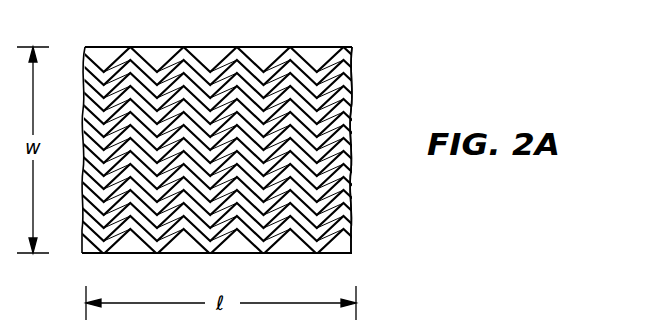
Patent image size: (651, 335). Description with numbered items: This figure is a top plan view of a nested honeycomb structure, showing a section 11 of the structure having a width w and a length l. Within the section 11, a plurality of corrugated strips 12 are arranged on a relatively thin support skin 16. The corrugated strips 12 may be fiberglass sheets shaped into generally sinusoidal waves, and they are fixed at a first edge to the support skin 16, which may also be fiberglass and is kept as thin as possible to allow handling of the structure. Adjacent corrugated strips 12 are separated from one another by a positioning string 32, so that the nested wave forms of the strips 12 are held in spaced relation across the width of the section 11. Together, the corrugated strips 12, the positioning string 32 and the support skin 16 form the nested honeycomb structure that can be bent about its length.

The section 11 is at (362, 86).
The corrugated strip 12 is at (339, 46).
The support skin 16 is at (262, 46).
The positioning string 32 is at (220, 66).